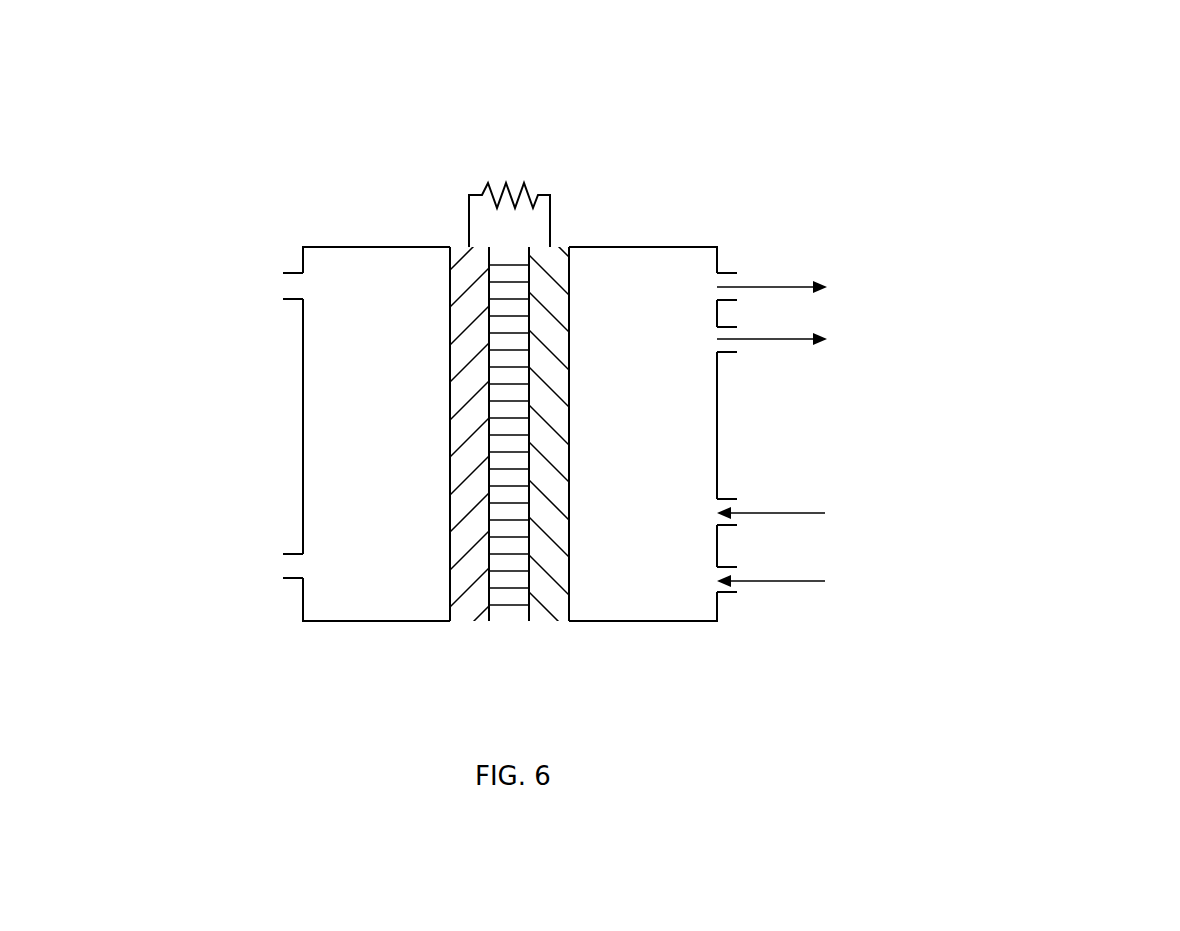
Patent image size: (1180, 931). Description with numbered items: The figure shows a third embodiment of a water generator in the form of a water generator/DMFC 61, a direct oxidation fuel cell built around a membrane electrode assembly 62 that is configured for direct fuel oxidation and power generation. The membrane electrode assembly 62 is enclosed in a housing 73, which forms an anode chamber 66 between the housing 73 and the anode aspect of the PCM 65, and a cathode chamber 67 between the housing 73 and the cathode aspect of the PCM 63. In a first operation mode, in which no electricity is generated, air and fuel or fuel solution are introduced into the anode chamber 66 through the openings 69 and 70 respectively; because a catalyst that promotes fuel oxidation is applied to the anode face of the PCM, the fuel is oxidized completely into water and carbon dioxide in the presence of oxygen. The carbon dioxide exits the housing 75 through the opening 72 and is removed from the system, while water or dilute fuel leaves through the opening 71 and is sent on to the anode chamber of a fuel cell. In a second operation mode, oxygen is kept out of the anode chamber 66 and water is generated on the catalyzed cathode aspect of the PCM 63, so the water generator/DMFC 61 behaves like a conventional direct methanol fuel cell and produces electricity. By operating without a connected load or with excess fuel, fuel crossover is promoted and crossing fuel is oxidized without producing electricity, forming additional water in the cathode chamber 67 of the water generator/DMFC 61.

The water generator/DMFC 61 is at (643, 363).
The membrane electrode assembly 62 is at (403, 435).
The cathode aspect of the PCM 63 is at (475, 612).
The anode aspect of the PCM 65 is at (557, 612).
The anode chamber 66 is at (637, 260).
The cathode chamber 67 is at (393, 260).
The opening 69 is at (733, 592).
The opening 70 is at (733, 501).
The opening 71 is at (733, 345).
The opening 72 is at (733, 281).
The housing 73 is at (660, 621).
The housing 75 is at (288, 288).